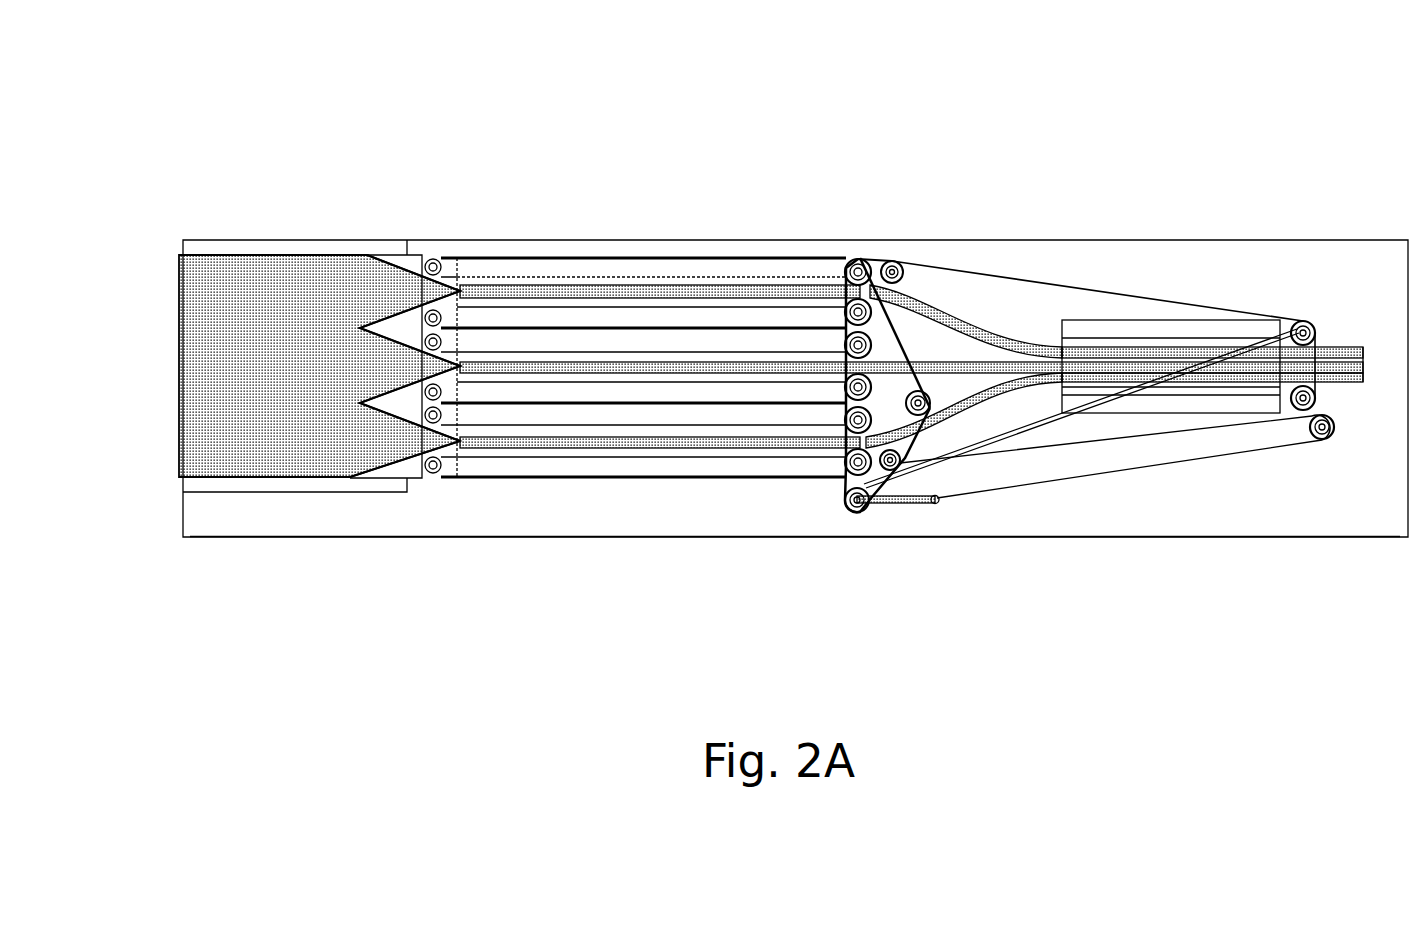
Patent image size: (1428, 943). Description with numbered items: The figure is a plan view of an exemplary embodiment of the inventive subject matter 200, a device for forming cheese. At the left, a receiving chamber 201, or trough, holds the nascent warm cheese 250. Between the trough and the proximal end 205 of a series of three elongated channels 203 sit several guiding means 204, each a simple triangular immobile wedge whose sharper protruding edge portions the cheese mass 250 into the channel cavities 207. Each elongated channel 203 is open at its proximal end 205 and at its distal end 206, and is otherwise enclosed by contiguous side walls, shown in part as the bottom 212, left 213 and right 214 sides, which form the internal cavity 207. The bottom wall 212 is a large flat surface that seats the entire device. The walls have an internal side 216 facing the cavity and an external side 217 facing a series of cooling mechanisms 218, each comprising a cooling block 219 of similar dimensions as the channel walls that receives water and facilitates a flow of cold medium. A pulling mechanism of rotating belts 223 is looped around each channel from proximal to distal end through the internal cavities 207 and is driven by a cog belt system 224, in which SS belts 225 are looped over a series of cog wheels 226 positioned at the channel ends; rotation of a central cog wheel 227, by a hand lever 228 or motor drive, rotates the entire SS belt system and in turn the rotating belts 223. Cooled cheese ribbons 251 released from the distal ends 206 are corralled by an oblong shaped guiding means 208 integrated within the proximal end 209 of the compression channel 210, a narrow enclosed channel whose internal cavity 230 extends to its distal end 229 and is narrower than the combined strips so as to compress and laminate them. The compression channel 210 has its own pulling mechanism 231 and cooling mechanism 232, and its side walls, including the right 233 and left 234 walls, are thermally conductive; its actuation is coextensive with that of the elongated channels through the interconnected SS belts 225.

The inventive subject matter 200 is at (1208, 715).
The receiving chamber 201 is at (182, 478).
The elongated channels 203 is at (535, 268).
The guiding means 204 is at (387, 403).
The proximal end 205 is at (433, 476).
The distal end 206 is at (847, 262).
The internal cavity 207 is at (655, 370).
The guiding means 208 is at (968, 322).
The proximal end 209 is at (1070, 345).
The compression channel 210 is at (1232, 332).
The bottom side wall 212 is at (700, 510).
The left side wall 213 is at (745, 428).
The right side wall 214 is at (782, 452).
The internal side 216 is at (558, 282).
The external side 217 is at (590, 278).
The cooling mechanism 218 is at (502, 264).
The cooling block 219 is at (455, 272).
The rotating belts 223 is at (410, 477).
The cog belt system 224 is at (863, 258).
The SS belts 225 is at (905, 343).
The cog wheels 226 is at (433, 258).
The central cog wheel 227 is at (858, 515).
The hand lever 228 is at (910, 503).
The distal end 229 is at (1290, 330).
The internal cavity 230 is at (1203, 447).
The pulling mechanism 231 is at (1032, 280).
The cooling mechanism 232 is at (1130, 330).
The right side wall 233 is at (1262, 432).
The left side wall 234 is at (1321, 427).
The nascent warm cheese 250 is at (210, 407).
The cheese ribbons 251 is at (990, 378).